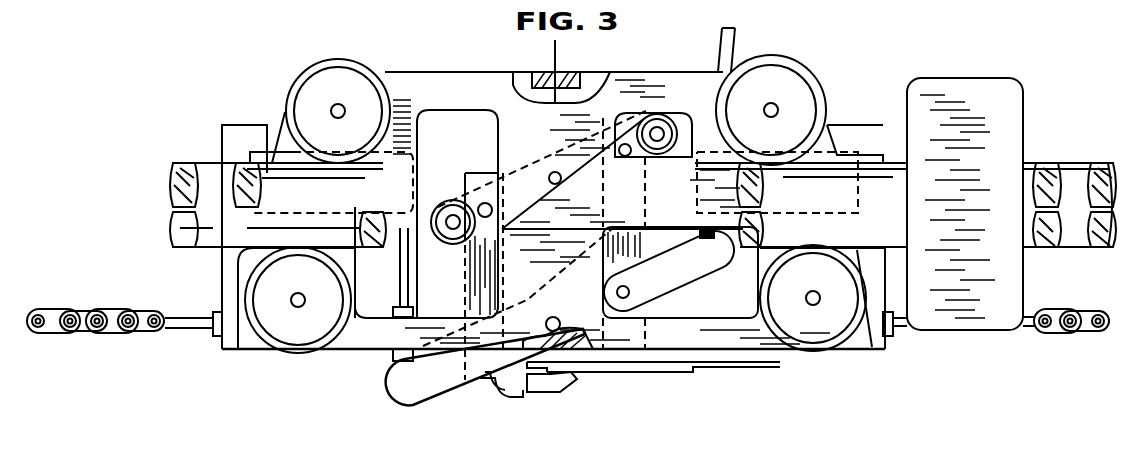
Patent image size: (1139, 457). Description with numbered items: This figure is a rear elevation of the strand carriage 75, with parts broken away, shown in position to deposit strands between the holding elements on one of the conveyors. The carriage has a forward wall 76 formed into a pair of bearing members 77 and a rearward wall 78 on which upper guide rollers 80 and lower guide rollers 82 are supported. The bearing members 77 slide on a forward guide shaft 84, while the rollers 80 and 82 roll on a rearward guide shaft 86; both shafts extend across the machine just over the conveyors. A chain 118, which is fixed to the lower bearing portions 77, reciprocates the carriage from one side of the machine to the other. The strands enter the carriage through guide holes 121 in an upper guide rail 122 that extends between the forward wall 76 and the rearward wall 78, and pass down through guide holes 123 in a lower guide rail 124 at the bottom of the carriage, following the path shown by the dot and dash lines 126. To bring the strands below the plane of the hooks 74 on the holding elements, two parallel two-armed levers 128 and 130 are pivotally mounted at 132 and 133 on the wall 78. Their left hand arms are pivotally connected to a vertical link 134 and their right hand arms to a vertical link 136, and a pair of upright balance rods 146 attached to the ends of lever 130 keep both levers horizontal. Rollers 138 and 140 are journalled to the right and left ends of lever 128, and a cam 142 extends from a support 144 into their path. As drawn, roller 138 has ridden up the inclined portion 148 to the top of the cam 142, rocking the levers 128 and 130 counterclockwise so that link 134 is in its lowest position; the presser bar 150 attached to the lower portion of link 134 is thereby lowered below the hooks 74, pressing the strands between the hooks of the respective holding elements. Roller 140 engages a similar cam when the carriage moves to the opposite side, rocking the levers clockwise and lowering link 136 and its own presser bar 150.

The strand engaging hook portion 74 is at (525, 390).
The strand carriage 75 is at (275, 92).
The forward wall 76 is at (238, 135).
The bearing members 77 is at (230, 280).
The rearward wall 78 is at (427, 92).
The upper guide rollers 80 is at (360, 75).
The lower guide rollers 82 is at (292, 350).
The forward guide shaft 84 is at (208, 177).
The rearward guide shaft 86 is at (265, 172).
The chain 118 is at (87, 318).
The guide holes 121 is at (548, 72).
The upper guide rail 122 is at (532, 80).
The guide holes 123 is at (560, 352).
The lower guide rail 124 is at (582, 340).
The dot and dash lines 126 is at (555, 43).
The two-armed lever 128 is at (490, 193).
The two-armed lever 130 is at (410, 383).
The pivot 132 is at (552, 172).
The pivot 133 is at (551, 317).
The vertical link 134 is at (480, 267).
The vertical link 136 is at (633, 244).
The roller 138 is at (662, 128).
The roller 140 is at (448, 208).
The cam 142 is at (683, 200).
The support 144 is at (958, 102).
The balance rods 146 is at (720, 42).
The inclined portion 148 is at (540, 195).
The presser bar 150 is at (503, 393).